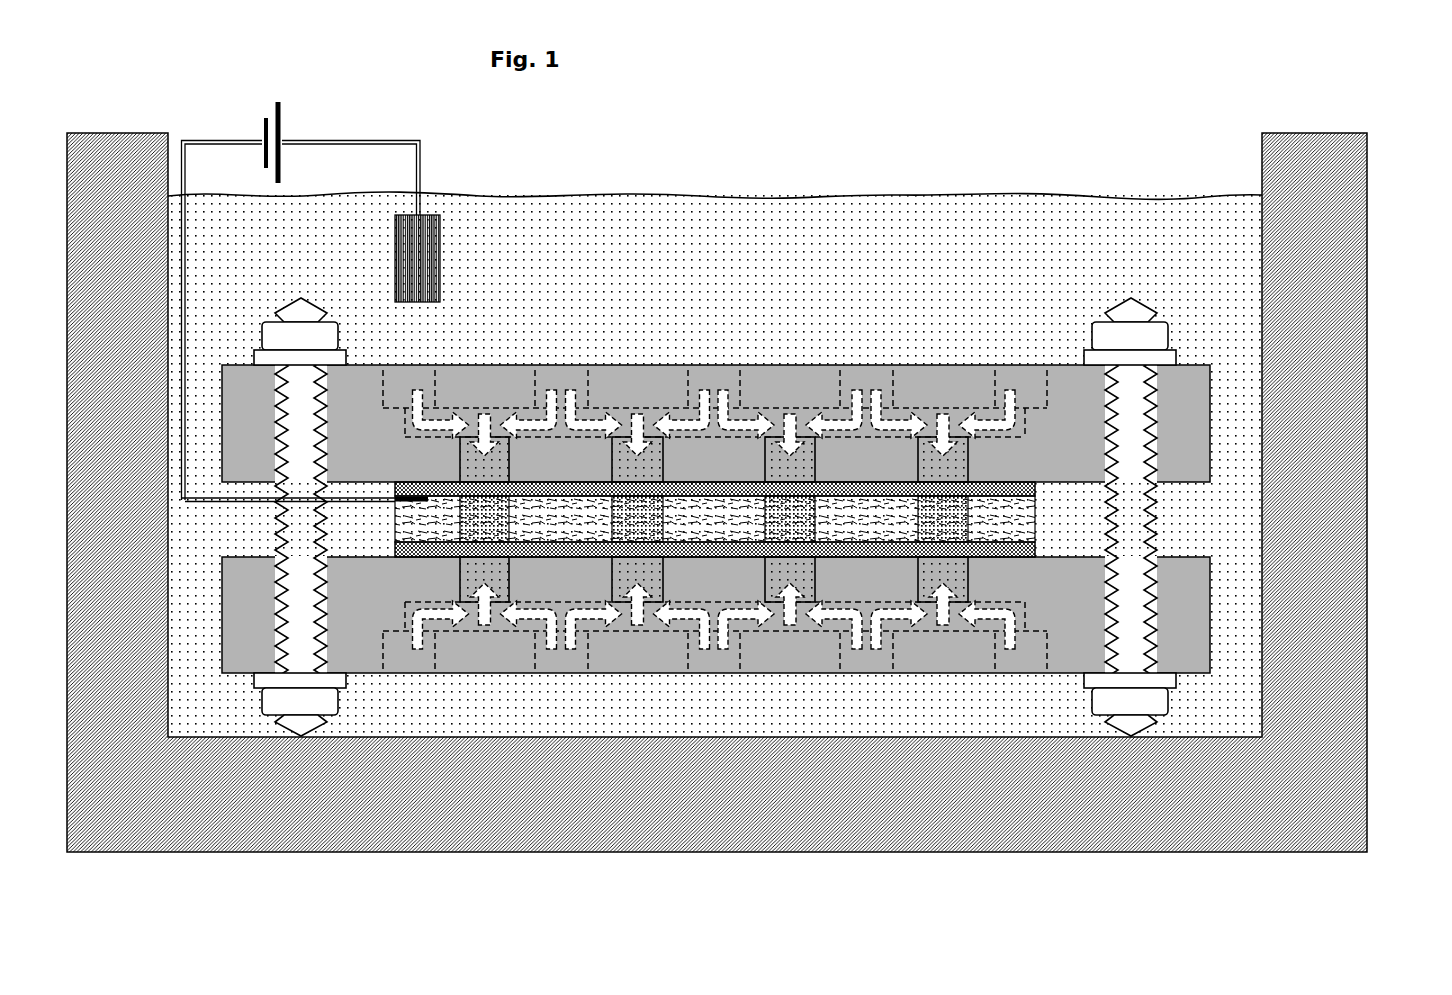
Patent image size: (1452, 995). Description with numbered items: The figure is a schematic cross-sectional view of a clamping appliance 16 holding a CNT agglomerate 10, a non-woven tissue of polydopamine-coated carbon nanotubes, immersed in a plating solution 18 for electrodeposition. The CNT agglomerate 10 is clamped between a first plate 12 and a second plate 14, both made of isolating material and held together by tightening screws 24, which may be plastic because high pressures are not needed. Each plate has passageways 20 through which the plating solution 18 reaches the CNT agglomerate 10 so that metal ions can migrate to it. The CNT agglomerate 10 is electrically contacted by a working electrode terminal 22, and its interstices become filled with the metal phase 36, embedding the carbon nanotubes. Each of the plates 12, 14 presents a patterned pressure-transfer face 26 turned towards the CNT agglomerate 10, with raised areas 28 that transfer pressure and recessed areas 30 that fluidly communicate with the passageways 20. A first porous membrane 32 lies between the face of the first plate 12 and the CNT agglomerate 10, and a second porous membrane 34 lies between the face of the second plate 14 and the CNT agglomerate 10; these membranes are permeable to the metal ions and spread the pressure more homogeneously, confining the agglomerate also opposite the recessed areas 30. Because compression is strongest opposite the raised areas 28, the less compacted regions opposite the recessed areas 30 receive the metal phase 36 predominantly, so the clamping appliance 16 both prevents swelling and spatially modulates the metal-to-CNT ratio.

The CNT agglomerate 10 is at (916, 444).
The first plate 12 is at (828, 302).
The second plate 14 is at (1175, 618).
The clamping appliance 16 is at (1156, 277).
The plating solution 18 is at (693, 293).
The passageways 20 is at (872, 385).
The working electrode terminal 22 is at (392, 497).
The tightening screws 24 is at (1130, 298).
The patterned pressure-transfer face 26 is at (1056, 552).
The raised areas 28 is at (562, 478).
The recessed areas 30 is at (652, 462).
The first porous membrane 32 is at (1003, 490).
The second porous membrane 34 is at (1010, 552).
The metal phase 36 is at (628, 517).